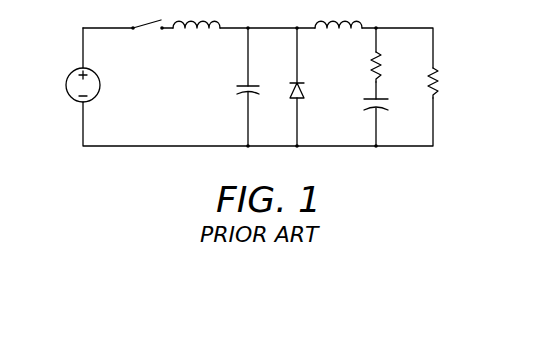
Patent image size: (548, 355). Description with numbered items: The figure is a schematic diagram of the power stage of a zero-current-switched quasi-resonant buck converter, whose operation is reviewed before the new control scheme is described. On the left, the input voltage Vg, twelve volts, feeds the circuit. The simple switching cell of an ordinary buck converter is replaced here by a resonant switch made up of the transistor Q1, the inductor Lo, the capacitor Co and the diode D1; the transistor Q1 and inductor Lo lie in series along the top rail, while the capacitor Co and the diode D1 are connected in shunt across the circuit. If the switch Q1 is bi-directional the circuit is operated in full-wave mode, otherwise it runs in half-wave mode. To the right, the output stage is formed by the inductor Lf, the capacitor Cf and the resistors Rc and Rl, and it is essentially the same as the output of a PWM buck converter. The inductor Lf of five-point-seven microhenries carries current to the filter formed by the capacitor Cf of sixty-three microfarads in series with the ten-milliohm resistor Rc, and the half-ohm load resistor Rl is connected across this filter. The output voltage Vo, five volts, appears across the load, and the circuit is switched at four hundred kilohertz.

The input voltage Vg is at (71, 85).
The transistor Q1 is at (141, 16).
The inductor Lo is at (196, 16).
The capacitor Co is at (235, 88).
The diode D1 is at (307, 95).
The inductor Lf is at (338, 15).
The resistor Rc is at (363, 67).
The capacitor Cf is at (366, 113).
The resistor Rl is at (421, 83).
The output voltage Vo is at (444, 26).